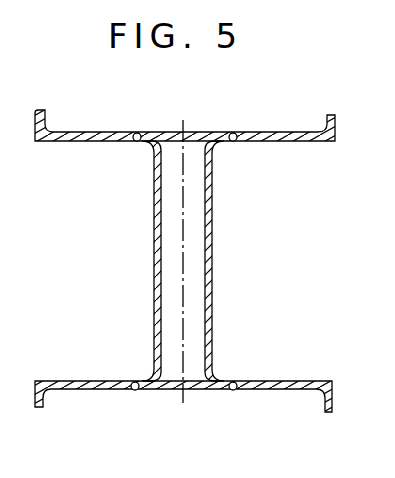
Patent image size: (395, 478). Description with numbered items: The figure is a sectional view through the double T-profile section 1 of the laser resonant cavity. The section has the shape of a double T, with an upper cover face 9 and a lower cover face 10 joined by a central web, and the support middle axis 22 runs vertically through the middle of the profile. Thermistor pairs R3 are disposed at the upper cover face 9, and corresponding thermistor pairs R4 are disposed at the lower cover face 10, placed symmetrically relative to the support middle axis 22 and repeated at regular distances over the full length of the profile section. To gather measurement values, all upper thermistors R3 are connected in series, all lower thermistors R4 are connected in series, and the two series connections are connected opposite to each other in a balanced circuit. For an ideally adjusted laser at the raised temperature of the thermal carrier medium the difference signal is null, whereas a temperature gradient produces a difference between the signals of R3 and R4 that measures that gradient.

The double T-profile section 1 is at (212, 248).
The upper cover face 9 is at (260, 133).
The lower cover face 10 is at (276, 393).
The support middle axis 22 is at (185, 209).
The upper thermistors R3 is at (138, 133).
The lower thermistors R4 is at (137, 391).